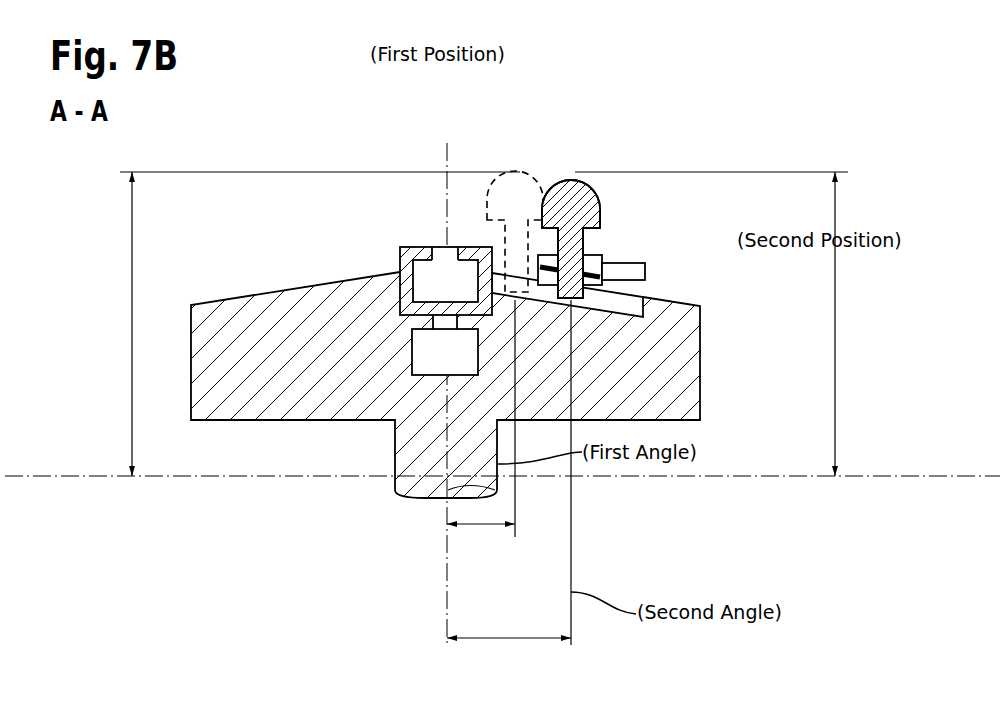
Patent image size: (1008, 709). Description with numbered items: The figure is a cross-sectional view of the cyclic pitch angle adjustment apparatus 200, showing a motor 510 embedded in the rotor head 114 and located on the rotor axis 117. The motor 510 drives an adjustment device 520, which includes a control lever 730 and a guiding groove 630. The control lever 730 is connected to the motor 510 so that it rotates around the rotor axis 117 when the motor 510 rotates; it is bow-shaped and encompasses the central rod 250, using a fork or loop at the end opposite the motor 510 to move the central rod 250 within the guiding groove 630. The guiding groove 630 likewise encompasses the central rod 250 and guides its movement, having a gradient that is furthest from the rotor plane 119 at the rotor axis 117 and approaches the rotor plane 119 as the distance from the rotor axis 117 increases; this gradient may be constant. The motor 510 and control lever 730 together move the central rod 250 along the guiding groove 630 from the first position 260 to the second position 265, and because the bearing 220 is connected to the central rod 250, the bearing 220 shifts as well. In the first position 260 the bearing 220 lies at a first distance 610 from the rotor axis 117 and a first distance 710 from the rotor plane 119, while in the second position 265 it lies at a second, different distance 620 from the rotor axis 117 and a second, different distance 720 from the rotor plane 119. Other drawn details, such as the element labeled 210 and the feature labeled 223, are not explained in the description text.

The rotor head 114 is at (247, 297).
The rotor axis 117 is at (447, 578).
The rotor plane 119 is at (680, 480).
The cyclic pitch angle adjustment apparatus 200 is at (743, 118).
The spring element 210 is at (578, 308).
The bearing 220 is at (601, 212).
The head of actuating element 223 is at (565, 168).
The central rod 250 is at (584, 253).
The first position 260 is at (510, 168).
The second position 265 is at (583, 172).
The motor 510 is at (412, 348).
The adjustment device 520 is at (387, 261).
The first distance 610 is at (481, 524).
The second distance 620 is at (510, 638).
The guiding groove 630 is at (638, 296).
The first distance 710 is at (132, 335).
The second distance 720 is at (835, 343).
The control lever 730 is at (417, 247).